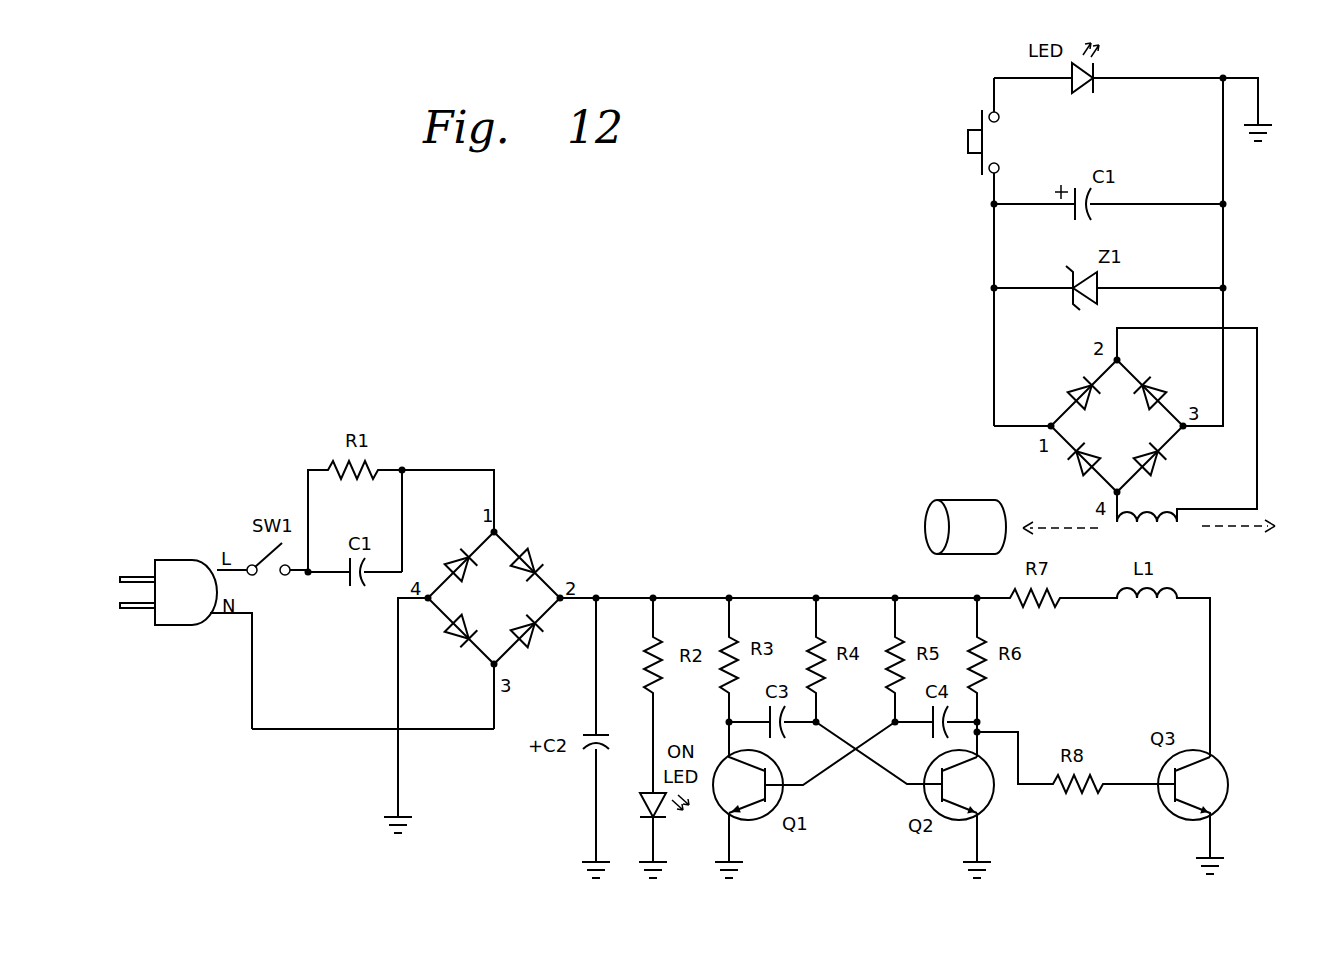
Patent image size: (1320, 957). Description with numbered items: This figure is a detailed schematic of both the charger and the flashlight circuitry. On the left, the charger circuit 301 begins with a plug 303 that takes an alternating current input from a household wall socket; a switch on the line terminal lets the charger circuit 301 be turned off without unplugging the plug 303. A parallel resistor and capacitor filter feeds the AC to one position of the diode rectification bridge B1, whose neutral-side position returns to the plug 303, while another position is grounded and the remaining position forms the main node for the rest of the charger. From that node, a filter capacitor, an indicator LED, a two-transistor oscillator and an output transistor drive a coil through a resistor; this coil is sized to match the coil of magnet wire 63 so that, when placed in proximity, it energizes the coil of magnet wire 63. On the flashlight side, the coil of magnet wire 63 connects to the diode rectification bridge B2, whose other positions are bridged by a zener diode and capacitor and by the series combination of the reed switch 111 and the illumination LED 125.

The plug 303 is at (170, 560).
The charger circuit 301 is at (346, 836).
The diode rectification bridge B1 is at (494, 567).
The diode rectification bridge B2 is at (1070, 410).
The coil of magnet wire 63 is at (1175, 522).
The reed switch 111 is at (980, 130).
The illumination LED 125 is at (1095, 62).